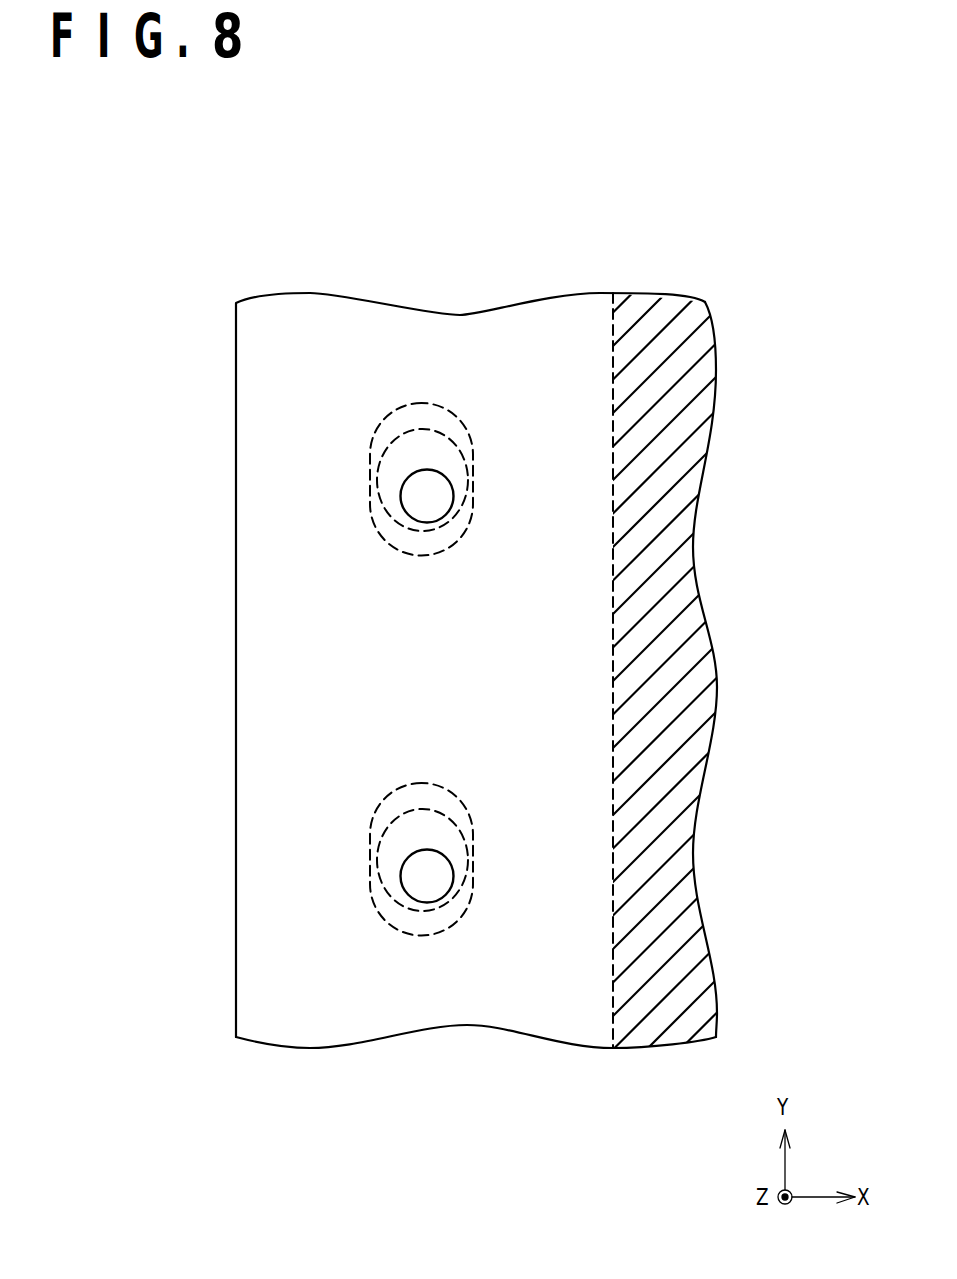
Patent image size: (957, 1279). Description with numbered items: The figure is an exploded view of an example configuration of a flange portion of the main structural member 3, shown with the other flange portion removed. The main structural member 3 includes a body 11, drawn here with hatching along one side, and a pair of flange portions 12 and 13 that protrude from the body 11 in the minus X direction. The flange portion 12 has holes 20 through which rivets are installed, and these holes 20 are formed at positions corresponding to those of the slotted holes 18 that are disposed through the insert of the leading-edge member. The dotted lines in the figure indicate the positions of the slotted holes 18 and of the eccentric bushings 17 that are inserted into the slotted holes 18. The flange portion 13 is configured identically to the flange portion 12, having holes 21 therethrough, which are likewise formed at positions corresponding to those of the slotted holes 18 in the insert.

The main structural member 3 is at (453, 647).
The body 11 is at (678, 317).
The flange portion 12 is at (439, 670).
The flange portion 13 is at (248, 353).
The eccentric bushing 17 is at (465, 494).
The slotted hole 18 is at (449, 414).
The hole 20 is at (376, 685).
The hole 21 is at (376, 686).